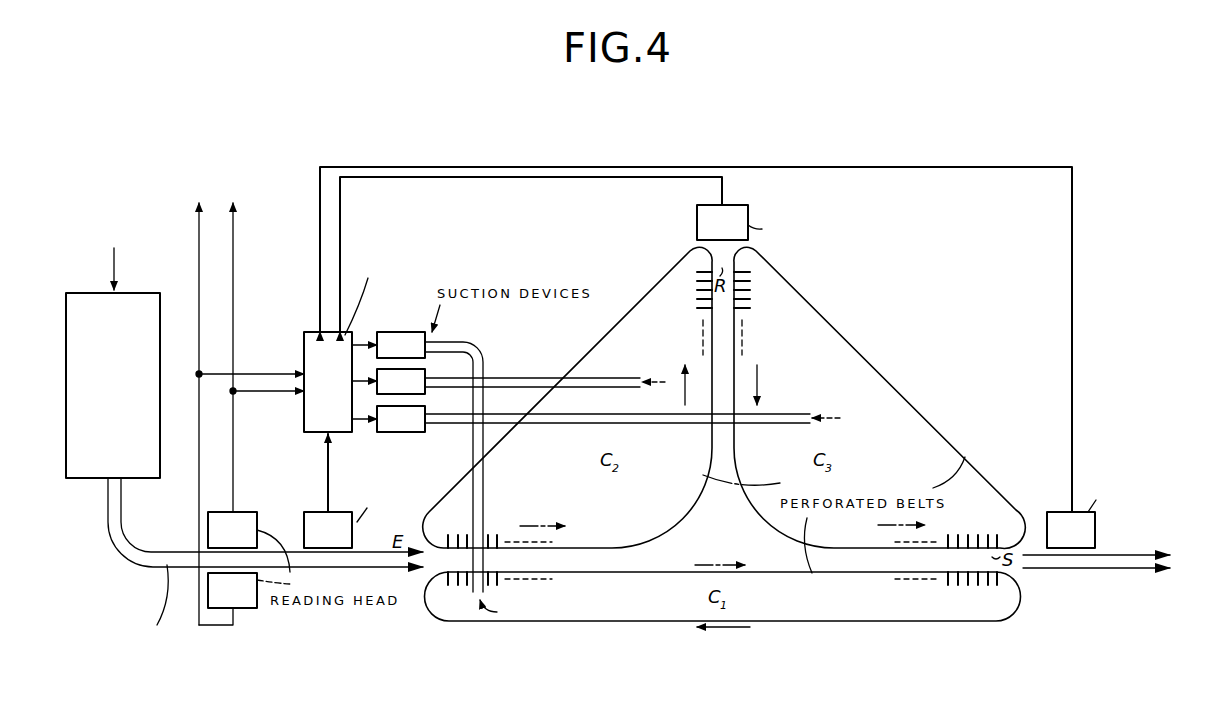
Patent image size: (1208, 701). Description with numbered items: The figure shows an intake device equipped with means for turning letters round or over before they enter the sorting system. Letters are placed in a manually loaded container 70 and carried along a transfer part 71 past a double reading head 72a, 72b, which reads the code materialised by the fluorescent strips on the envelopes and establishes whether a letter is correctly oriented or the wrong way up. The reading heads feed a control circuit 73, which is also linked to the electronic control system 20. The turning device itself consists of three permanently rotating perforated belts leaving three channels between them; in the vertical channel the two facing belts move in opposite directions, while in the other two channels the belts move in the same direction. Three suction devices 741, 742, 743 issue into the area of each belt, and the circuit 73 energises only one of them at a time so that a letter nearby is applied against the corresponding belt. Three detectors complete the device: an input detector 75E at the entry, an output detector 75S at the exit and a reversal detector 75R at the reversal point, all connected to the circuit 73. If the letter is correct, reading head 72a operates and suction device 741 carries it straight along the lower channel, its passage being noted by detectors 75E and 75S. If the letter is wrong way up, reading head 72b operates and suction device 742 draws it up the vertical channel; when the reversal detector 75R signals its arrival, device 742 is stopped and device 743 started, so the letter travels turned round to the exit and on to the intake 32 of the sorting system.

The electronic control system 20 is at (250, 401).
The intake 32 is at (1109, 559).
The container 70 is at (102, 406).
The transfer part 71 is at (128, 552).
The reading head 72a is at (249, 542).
The reading head 72b is at (249, 590).
The control circuit 73 is at (321, 404).
The suction device 741 is at (406, 331).
The suction device 742 is at (432, 368).
The suction device 743 is at (410, 432).
The input detector 75E is at (367, 491).
The reversal detector 75R is at (819, 222).
The output detector 75S is at (1110, 503).